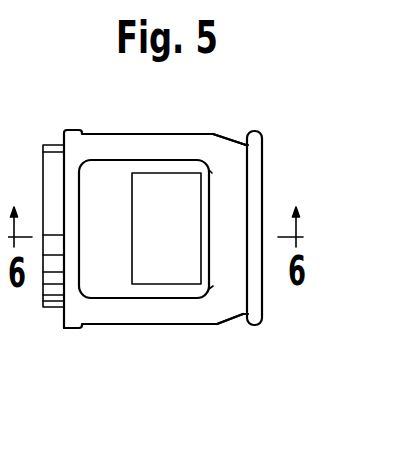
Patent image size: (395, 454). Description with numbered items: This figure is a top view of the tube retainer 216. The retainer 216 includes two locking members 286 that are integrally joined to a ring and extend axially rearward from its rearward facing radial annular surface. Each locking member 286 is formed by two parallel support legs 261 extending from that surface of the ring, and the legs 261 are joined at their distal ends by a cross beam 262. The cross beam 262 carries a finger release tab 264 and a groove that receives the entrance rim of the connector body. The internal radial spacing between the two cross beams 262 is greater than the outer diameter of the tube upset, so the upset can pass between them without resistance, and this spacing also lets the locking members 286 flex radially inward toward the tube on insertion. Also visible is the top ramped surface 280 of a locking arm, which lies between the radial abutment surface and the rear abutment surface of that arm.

The retainer 216 is at (200, 337).
The support legs 261 is at (110, 138).
The cross beam 262 is at (225, 262).
The finger release tab 264 is at (247, 137).
The top ramped surface 280 is at (163, 270).
The locking members 286 is at (270, 140).